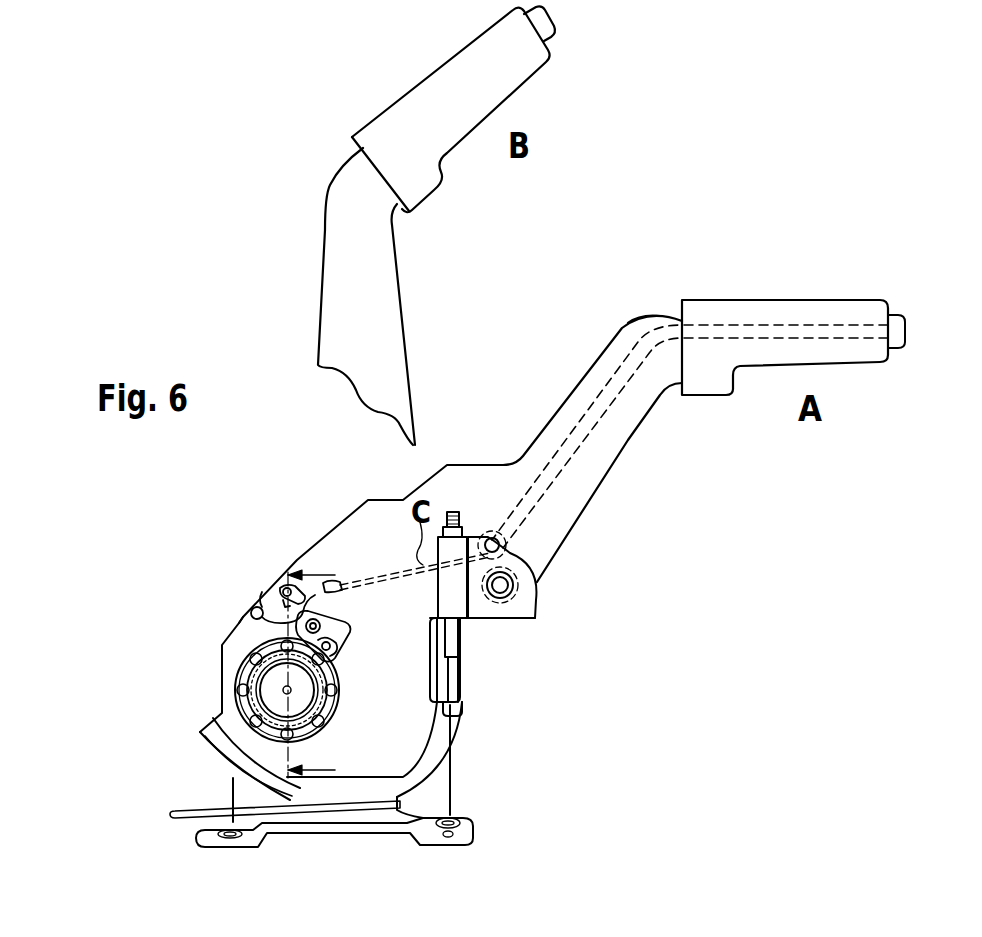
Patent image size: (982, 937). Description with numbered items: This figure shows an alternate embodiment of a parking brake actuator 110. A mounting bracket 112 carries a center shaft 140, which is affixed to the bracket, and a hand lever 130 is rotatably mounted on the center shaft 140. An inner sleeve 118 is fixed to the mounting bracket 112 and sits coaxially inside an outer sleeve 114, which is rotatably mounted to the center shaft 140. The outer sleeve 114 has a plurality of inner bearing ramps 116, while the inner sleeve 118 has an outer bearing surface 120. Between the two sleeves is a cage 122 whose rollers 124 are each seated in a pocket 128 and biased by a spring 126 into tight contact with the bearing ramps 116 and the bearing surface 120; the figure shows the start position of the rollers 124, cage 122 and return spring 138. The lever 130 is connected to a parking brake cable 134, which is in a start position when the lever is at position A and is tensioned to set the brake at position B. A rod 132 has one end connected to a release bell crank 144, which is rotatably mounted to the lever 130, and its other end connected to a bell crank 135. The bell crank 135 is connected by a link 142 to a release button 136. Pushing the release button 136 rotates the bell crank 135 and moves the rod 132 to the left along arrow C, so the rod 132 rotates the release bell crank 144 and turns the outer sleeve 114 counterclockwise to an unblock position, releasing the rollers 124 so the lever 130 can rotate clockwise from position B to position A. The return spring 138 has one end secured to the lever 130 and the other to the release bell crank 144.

The parking brake actuator 110 is at (215, 655).
The mounting bracket 112 is at (475, 815).
The outer sleeve 114 is at (333, 713).
The inner bearing ramps 116 is at (283, 694).
The inner sleeve 118 is at (328, 680).
The outer bearing surface 120 is at (238, 690).
The cage 122 is at (345, 640).
The rollers 124 is at (202, 733).
The spring 126 is at (238, 672).
The pocket 128 is at (320, 723).
The lever 130 is at (378, 280).
The rod 132 is at (333, 585).
The parking brake cable 134 is at (183, 820).
The bell crank 135 is at (537, 587).
The release button 136 is at (905, 332).
The return spring 138 is at (262, 592).
The center shaft 140 is at (235, 633).
The link 142 is at (648, 350).
The release bell crank 144 is at (345, 580).